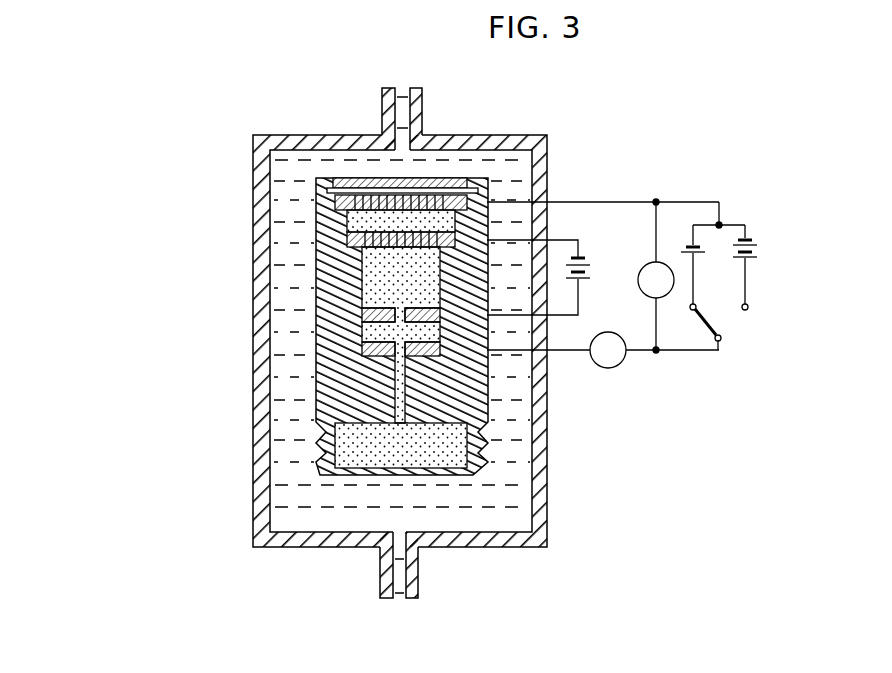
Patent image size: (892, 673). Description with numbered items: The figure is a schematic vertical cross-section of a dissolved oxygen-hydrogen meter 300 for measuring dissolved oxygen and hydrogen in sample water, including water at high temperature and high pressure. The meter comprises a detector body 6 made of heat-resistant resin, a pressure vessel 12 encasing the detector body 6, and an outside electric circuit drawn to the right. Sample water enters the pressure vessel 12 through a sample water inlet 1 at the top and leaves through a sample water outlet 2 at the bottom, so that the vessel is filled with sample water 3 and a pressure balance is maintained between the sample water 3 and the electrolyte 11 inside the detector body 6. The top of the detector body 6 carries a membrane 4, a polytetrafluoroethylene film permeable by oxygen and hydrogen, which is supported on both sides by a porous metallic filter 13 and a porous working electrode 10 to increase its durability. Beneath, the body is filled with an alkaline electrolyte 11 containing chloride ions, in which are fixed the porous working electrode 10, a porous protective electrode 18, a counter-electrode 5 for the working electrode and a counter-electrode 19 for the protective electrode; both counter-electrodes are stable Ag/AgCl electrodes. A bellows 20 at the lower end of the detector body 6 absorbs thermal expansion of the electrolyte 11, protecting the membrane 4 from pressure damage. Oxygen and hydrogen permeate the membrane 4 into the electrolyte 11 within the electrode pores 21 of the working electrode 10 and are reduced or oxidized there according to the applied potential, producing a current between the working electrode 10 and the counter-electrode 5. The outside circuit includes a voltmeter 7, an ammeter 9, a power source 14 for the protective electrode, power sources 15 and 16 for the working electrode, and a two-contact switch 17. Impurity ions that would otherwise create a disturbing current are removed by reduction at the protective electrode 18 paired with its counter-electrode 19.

The sample water inlet 1 is at (403, 103).
The sample water outlet 2 is at (383, 571).
The liquid 3 is at (480, 532).
The membrane 4 is at (328, 186).
The counter-electrode for working electrode 5 is at (362, 349).
The detector body 6 is at (318, 387).
The voltmeter 7 is at (641, 288).
The ammeter 9 is at (608, 369).
The porous working electrode 10 is at (335, 202).
The electrolyte 11 is at (318, 278).
The pressure vessel 12 is at (516, 135).
The porous metallic filter 13 is at (464, 181).
The power source for protective electrode 14 is at (600, 268).
The power source for working electrode 15 is at (706, 256).
The power source for working electrode 16 is at (763, 256).
The two-contact switch 17 is at (722, 336).
The porous protective electrode 18 is at (347, 240).
The counter-electrode for protective electrode 19 is at (362, 315).
The bellows 20 is at (325, 440).
The electrode pores 21 is at (353, 178).
The dissolved oxygen-hydrogen meter 300 is at (241, 195).